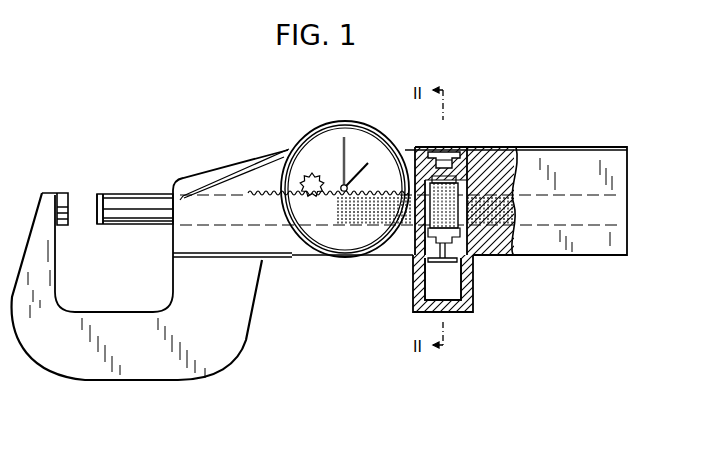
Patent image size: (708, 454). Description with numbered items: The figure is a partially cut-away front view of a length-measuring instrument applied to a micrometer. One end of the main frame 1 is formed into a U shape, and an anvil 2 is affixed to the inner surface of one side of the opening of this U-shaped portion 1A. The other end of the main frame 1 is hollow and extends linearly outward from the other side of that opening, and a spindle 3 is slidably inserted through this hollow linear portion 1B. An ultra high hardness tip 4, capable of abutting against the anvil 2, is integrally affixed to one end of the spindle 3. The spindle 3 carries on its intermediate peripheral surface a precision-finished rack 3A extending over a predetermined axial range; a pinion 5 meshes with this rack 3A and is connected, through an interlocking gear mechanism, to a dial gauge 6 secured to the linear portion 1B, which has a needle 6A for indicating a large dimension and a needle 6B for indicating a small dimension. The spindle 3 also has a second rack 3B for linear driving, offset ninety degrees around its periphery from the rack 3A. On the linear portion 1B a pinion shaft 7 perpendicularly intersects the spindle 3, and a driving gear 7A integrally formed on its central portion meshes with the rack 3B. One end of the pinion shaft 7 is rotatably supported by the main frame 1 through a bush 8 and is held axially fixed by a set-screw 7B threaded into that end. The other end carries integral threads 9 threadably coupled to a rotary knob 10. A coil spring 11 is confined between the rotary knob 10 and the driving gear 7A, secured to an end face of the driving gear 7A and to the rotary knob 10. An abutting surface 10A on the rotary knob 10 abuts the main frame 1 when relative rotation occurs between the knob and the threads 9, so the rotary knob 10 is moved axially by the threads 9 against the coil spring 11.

The main frame 1 is at (228, 188).
The U-shaped portion 1A is at (143, 380).
The hollow linear portion 1B is at (587, 160).
The anvil 2 is at (62, 193).
The spindle 3 is at (143, 205).
The rack 3A is at (265, 195).
The rack for linear driving 3B is at (522, 232).
The ultra high hardness tip 4 is at (104, 194).
The pinion 5 is at (312, 168).
The dial gauge 6 is at (360, 142).
The needle for indicating a large dimension 6A is at (358, 170).
The needle for indicating a small dimension 6B is at (343, 135).
The pinion shaft 7 is at (455, 207).
The driving gear 7A is at (452, 200).
The set-screw 7B is at (446, 152).
The bush 8 is at (466, 182).
The threads 9 is at (437, 250).
The rotary knob 10 is at (420, 290).
The abutting surface 10A is at (476, 243).
The coil spring 11 is at (405, 252).